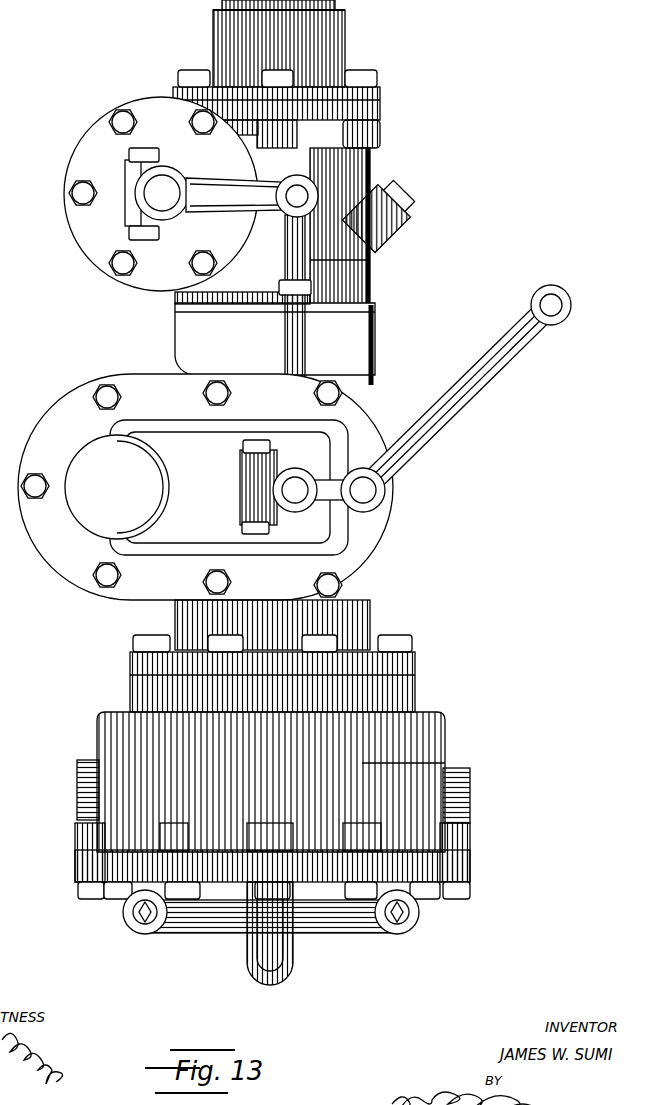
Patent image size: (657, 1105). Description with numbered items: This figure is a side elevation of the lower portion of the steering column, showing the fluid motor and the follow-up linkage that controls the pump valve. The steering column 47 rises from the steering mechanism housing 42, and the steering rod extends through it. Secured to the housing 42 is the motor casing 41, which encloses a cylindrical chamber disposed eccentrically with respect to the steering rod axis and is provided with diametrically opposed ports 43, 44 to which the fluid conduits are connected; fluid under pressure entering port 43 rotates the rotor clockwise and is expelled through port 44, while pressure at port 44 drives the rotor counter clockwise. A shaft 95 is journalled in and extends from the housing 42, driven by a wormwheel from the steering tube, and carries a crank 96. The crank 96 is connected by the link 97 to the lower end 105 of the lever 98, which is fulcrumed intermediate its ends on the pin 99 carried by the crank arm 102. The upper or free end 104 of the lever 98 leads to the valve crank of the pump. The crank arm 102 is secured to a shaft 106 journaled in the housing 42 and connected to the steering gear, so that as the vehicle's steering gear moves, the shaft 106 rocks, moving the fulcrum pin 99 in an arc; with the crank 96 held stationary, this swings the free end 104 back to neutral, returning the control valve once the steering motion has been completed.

The casing 41 is at (447, 742).
The steering mechanism housing 42 is at (377, 345).
The port 43 is at (470, 793).
The port 44 is at (78, 778).
The steering column 47 is at (347, 46).
The shaft 95 is at (158, 198).
The crank 96 is at (252, 196).
The link 97 is at (305, 340).
The lever 98 is at (388, 467).
The pin 99 is at (385, 497).
The crank arm 102 is at (315, 502).
The free end 104 is at (573, 305).
The lower end 105 is at (242, 514).
The shaft 106 is at (243, 470).